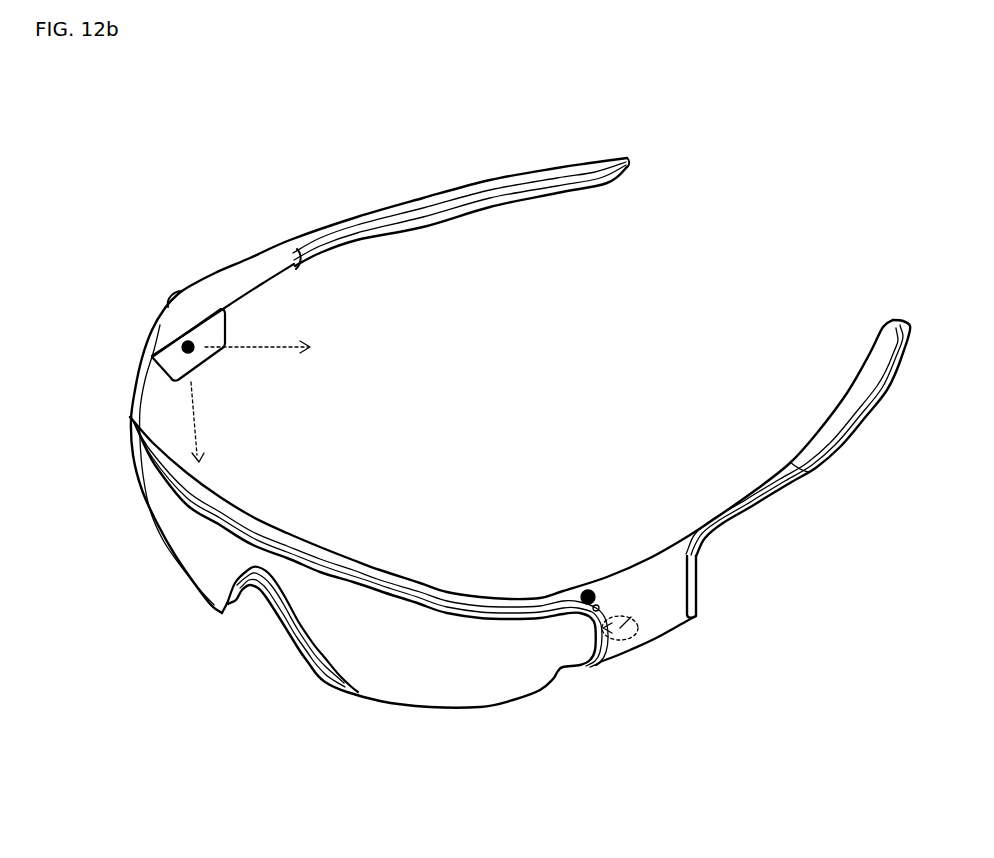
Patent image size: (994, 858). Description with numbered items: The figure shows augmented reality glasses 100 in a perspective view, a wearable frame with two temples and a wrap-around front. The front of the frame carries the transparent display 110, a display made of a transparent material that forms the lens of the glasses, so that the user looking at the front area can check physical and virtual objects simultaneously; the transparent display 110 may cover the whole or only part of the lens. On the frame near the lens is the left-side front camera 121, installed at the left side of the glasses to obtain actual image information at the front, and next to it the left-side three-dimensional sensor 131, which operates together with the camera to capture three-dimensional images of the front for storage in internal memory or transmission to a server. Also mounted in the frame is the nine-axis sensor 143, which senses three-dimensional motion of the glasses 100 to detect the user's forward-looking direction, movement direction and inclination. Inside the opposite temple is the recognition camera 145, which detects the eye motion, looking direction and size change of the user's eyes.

The augmented reality glasses 100 is at (187, 104).
The transparent display 110 is at (443, 677).
The left-side front camera 121 is at (588, 589).
The left-side 3D sensor 131 is at (600, 606).
The 9 axis sensor 143 is at (618, 642).
The recognition camera 145 is at (198, 340).